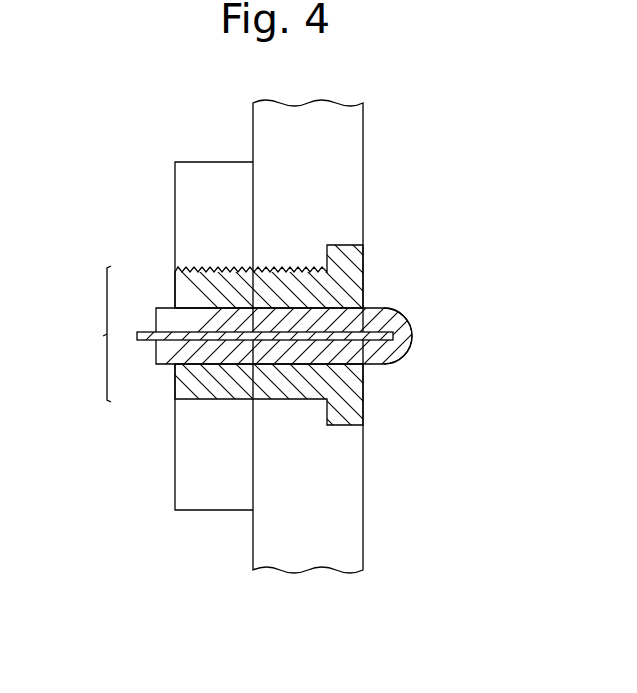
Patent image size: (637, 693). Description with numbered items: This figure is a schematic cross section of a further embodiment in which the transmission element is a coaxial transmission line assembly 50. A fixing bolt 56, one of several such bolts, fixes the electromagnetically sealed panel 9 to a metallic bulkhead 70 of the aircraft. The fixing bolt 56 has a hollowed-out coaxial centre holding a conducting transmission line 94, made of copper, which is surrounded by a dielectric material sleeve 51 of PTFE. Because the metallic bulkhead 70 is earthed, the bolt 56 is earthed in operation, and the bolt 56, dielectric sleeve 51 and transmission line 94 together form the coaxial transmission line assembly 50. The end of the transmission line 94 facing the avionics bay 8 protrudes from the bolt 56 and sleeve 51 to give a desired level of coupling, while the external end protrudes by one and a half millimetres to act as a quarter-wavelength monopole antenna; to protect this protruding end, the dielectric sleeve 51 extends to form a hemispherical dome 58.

The avionics bay 8 is at (125, 162).
The electromagnetically sealed panel 9 is at (340, 167).
The coaxial transmission line assembly 50 is at (91, 334).
The dielectric material sleeve 51 is at (378, 313).
The fixing bolt 56 is at (350, 258).
The hemispherical dome 58 is at (420, 348).
The metallic bulkhead 70 is at (203, 182).
The conducting transmission line 94 is at (142, 341).